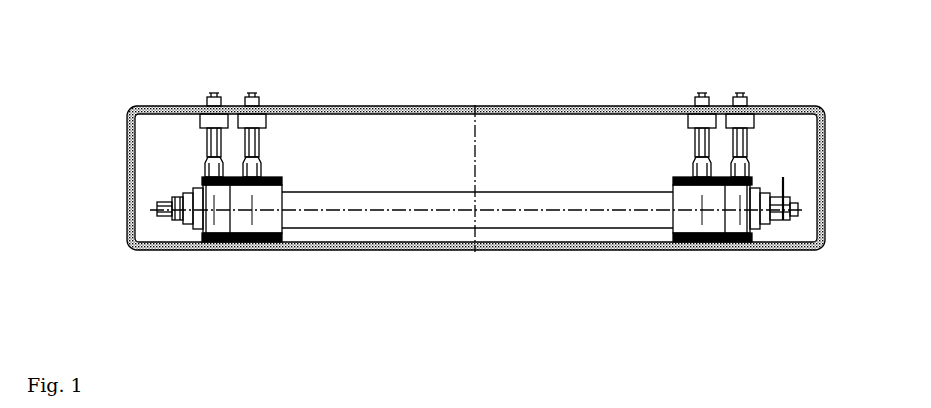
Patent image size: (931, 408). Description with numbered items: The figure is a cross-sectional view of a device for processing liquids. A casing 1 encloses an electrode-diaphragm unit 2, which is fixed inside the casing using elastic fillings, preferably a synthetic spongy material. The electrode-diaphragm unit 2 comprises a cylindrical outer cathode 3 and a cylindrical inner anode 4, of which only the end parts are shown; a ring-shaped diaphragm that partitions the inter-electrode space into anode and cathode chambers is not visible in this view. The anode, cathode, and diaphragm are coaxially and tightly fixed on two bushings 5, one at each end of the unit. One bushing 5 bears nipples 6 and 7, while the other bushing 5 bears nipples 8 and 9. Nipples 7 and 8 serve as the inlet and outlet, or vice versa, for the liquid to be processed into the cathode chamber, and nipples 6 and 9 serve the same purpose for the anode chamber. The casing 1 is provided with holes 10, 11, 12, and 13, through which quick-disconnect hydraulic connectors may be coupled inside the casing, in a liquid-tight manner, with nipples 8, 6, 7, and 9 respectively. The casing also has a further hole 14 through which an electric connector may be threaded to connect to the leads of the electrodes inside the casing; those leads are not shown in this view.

The casing 1 is at (429, 184).
The electrode-diaphragm unit 2 is at (477, 245).
The cylindrical outer cathode 3 is at (477, 253).
The cylindrical inner anode 4 is at (154, 254).
The bushing 5 is at (462, 253).
The nipple 6 is at (181, 97).
The nipple 7 is at (290, 97).
The nipple 8 is at (667, 97).
The nipple 9 is at (774, 97).
The hole 10 is at (720, 61).
The hole 11 is at (234, 61).
The hole 12 is at (277, 61).
The hole 13 is at (759, 61).
The hole 14 is at (862, 112).